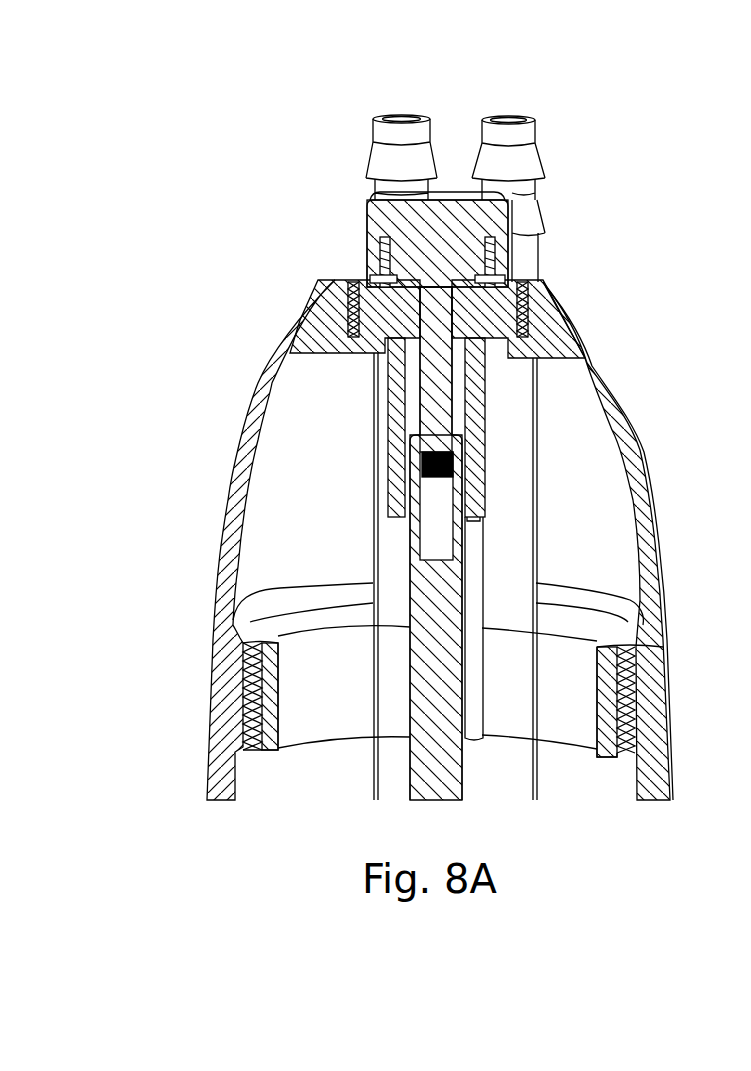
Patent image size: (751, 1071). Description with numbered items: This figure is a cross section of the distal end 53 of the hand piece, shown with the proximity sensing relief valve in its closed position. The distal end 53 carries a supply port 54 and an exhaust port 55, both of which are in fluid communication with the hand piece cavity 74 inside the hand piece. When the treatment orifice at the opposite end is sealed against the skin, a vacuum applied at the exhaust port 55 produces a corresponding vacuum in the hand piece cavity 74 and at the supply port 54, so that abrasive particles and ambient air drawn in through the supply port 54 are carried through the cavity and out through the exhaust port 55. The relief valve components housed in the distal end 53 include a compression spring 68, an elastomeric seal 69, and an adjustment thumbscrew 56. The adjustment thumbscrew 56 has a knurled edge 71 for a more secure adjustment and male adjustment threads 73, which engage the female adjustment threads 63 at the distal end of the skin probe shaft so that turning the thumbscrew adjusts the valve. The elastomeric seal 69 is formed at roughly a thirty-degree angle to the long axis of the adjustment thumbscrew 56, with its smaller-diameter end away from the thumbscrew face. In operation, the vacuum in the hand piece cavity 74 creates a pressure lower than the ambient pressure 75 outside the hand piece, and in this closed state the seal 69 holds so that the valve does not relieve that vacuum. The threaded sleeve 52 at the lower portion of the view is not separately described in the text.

The threaded sleeve cap 52 is at (212, 692).
The distal end 53 is at (222, 532).
The supply port 54 is at (403, 119).
The exhaust port 55 is at (515, 117).
The adjustment thumbscrew 56 is at (452, 382).
The female adjustment threads 63 is at (455, 465).
The compression spring 68 is at (495, 243).
The elastomeric seal 69 is at (421, 330).
The knurled edge 71 is at (370, 203).
The male adjustment threads 73 is at (405, 410).
The hand piece cavity 74 is at (322, 452).
The ambient pressure 75 is at (165, 443).